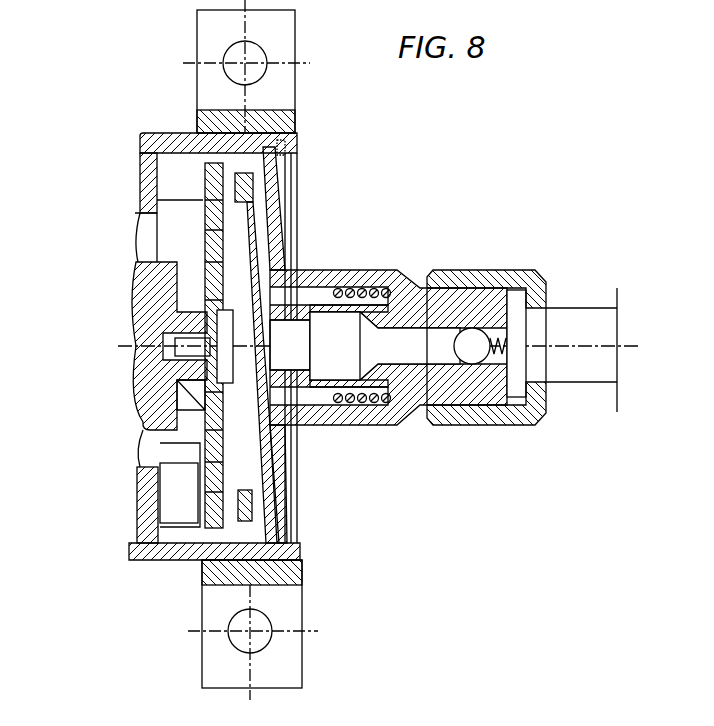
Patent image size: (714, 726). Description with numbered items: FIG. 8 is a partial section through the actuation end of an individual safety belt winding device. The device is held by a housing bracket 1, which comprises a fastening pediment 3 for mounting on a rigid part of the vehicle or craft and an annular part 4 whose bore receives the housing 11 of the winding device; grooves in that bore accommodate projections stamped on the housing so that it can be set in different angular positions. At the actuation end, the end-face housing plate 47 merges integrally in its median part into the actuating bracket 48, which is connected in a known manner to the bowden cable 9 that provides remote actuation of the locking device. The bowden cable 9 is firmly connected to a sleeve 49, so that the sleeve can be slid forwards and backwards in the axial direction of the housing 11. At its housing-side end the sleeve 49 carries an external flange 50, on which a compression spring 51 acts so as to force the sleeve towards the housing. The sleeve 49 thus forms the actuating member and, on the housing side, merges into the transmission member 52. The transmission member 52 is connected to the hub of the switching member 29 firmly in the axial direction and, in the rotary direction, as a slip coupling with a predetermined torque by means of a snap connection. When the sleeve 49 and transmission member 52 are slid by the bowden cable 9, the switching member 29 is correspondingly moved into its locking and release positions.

The housing bracket 1 is at (302, 625).
The fastening pediment 3 is at (215, 90).
The annular part 4 is at (300, 576).
The bowden cable 9 is at (495, 335).
The housing 11 is at (150, 143).
The switching member 29 is at (300, 396).
The end-face housing plate 47 is at (275, 176).
The actuating bracket 48 is at (378, 275).
The sleeve 49 is at (460, 378).
The external flange 50 is at (322, 398).
The compression spring 51 is at (365, 406).
The transmission member 52 is at (296, 306).